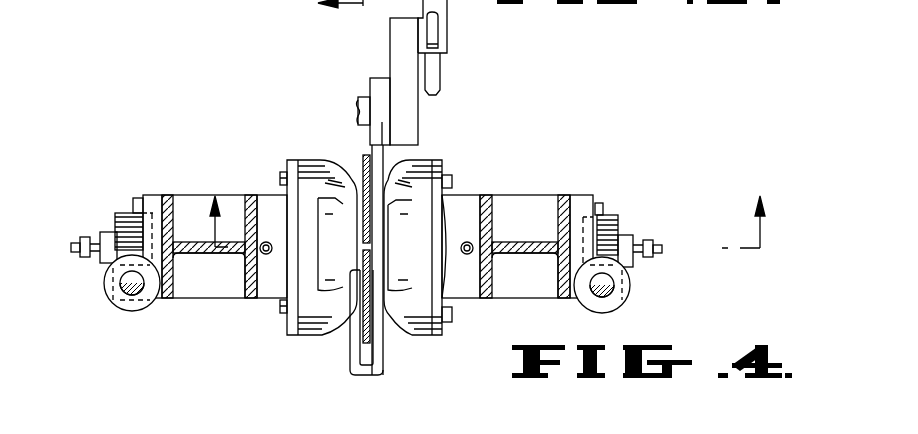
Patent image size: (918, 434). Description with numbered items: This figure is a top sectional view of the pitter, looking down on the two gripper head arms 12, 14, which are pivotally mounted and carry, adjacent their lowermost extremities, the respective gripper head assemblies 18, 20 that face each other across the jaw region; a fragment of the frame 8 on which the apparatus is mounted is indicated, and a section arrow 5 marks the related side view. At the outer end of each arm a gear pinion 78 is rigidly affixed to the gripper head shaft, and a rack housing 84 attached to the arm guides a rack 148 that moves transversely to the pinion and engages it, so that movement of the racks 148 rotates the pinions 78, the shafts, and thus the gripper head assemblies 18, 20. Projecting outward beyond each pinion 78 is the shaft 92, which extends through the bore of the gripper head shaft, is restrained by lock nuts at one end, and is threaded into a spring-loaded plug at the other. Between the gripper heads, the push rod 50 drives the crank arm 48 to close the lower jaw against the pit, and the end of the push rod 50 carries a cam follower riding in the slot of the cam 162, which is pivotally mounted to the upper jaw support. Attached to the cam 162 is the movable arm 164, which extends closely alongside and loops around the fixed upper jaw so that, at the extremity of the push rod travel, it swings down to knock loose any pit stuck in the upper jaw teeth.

The section view arrow 5 is at (329, 11).
The frame 8 is at (486, 204).
The gripper head arm 12 is at (528, 202).
The gripper head arm 14 is at (182, 202).
The gripper head assembly 18 is at (449, 162).
The gripper head assembly 20 is at (333, 156).
The crank arm 48 is at (440, 88).
The push rod 50 is at (440, 3).
The gear pinion 78 is at (125, 212).
The rack housing 84 is at (132, 312).
The shaft 92 is at (98, 243).
The rack 148 is at (127, 290).
The cam 162 is at (412, 125).
The movable arm 164 is at (352, 372).